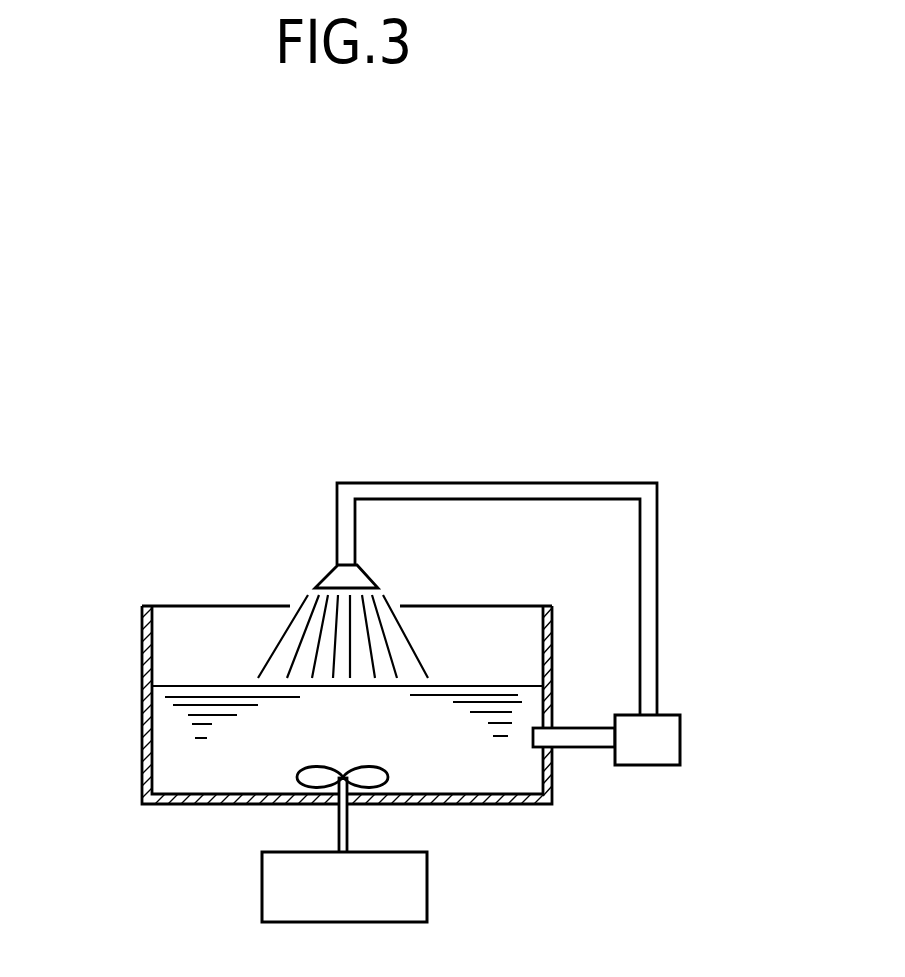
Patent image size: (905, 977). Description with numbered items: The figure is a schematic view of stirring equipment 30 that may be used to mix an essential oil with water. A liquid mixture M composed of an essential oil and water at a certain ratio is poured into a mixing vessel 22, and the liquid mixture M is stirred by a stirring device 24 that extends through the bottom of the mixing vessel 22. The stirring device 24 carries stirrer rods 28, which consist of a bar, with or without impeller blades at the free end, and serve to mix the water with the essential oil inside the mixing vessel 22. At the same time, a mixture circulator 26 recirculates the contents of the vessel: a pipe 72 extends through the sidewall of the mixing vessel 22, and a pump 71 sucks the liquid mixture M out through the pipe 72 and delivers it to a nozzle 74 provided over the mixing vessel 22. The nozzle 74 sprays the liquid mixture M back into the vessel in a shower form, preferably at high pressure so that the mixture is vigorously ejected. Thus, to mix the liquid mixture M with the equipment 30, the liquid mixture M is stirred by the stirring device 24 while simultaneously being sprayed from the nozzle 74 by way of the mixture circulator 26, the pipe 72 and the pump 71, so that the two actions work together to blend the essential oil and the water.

The equipment 30 is at (168, 485).
The mixing vessel 22 is at (142, 631).
The liquid mixture M is at (163, 763).
The mixture circulator 26 is at (673, 527).
The nozzle 74 is at (326, 577).
The pipe 72 is at (580, 748).
The pump 71 is at (680, 735).
The stirrer rods 28 is at (338, 828).
The stirring device 24 is at (427, 890).